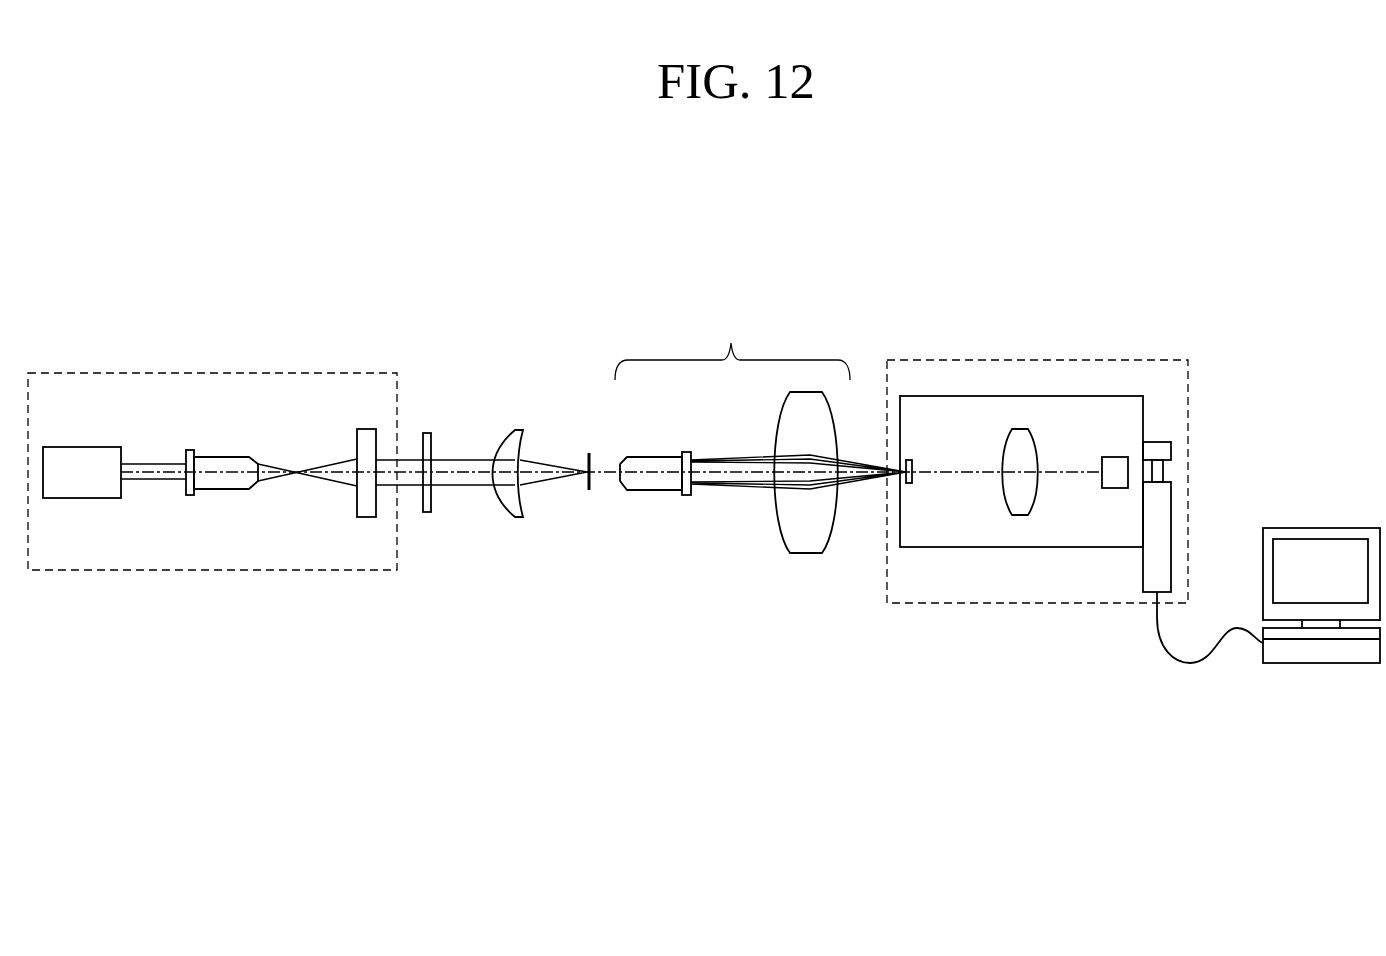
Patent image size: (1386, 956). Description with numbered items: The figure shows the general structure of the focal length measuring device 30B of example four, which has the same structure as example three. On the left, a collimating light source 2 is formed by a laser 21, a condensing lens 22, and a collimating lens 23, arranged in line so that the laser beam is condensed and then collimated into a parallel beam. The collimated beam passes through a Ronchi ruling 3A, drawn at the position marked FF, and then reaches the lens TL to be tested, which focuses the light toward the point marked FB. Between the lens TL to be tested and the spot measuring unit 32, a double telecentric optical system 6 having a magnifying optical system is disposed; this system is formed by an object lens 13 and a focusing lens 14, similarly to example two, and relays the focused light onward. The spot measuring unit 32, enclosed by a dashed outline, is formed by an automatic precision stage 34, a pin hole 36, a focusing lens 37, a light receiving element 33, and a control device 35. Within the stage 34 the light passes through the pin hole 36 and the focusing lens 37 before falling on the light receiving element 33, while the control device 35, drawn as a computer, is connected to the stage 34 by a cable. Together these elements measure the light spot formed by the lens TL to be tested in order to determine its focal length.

The collimating light source 2 is at (215, 373).
The laser 21 is at (78, 446).
The condensing lens 22 is at (220, 457).
The collimating lens 23 is at (356, 445).
The Ronchi ruling 3A is at (429, 432).
The front focal plane FF is at (427, 542).
The lens to be tested TL is at (540, 455).
The back focal point FB is at (590, 493).
The focal length measuring device 30B is at (507, 348).
The double telecentric optical system 6 is at (732, 340).
The object lens 13 is at (653, 492).
The focusing lens 14 is at (783, 540).
The spot measuring unit 32 is at (1127, 358).
The automatic precision stage 34 is at (997, 395).
The pin hole 36 is at (912, 479).
The focusing lens 37 is at (1007, 505).
The light receiving element 33 is at (1110, 488).
The control device 35 is at (1342, 527).